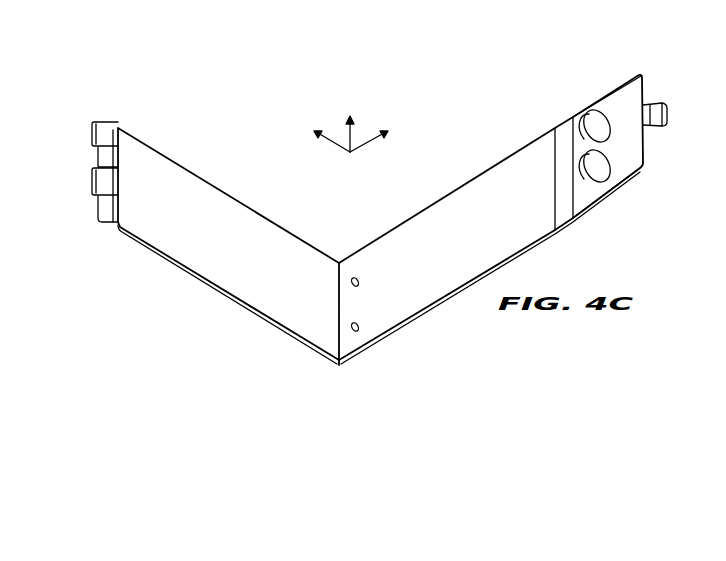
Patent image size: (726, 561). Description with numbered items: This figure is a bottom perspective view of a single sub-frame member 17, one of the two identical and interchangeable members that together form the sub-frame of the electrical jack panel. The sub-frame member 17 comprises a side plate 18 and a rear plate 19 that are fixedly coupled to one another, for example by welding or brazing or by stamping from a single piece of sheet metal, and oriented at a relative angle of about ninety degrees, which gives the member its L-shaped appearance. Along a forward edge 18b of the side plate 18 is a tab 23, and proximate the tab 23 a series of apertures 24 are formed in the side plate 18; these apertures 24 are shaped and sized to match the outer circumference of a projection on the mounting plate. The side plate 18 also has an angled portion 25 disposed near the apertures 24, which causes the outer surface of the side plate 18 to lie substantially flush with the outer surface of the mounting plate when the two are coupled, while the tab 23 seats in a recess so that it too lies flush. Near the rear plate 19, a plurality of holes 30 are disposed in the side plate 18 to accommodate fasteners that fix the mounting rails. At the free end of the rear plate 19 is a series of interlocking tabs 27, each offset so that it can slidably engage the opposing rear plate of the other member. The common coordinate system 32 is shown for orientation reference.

The sub-frame member 17 is at (407, 224).
The side plate 18 is at (531, 213).
The forward edge 18b is at (642, 76).
The rear plate 19 is at (215, 231).
The tab 23 is at (668, 108).
The apertures 24 is at (600, 112).
The angled portion 25 is at (567, 135).
The interlocking tabs 27 is at (102, 130).
The holes 30 is at (360, 326).
The coordinate system 32 is at (350, 152).